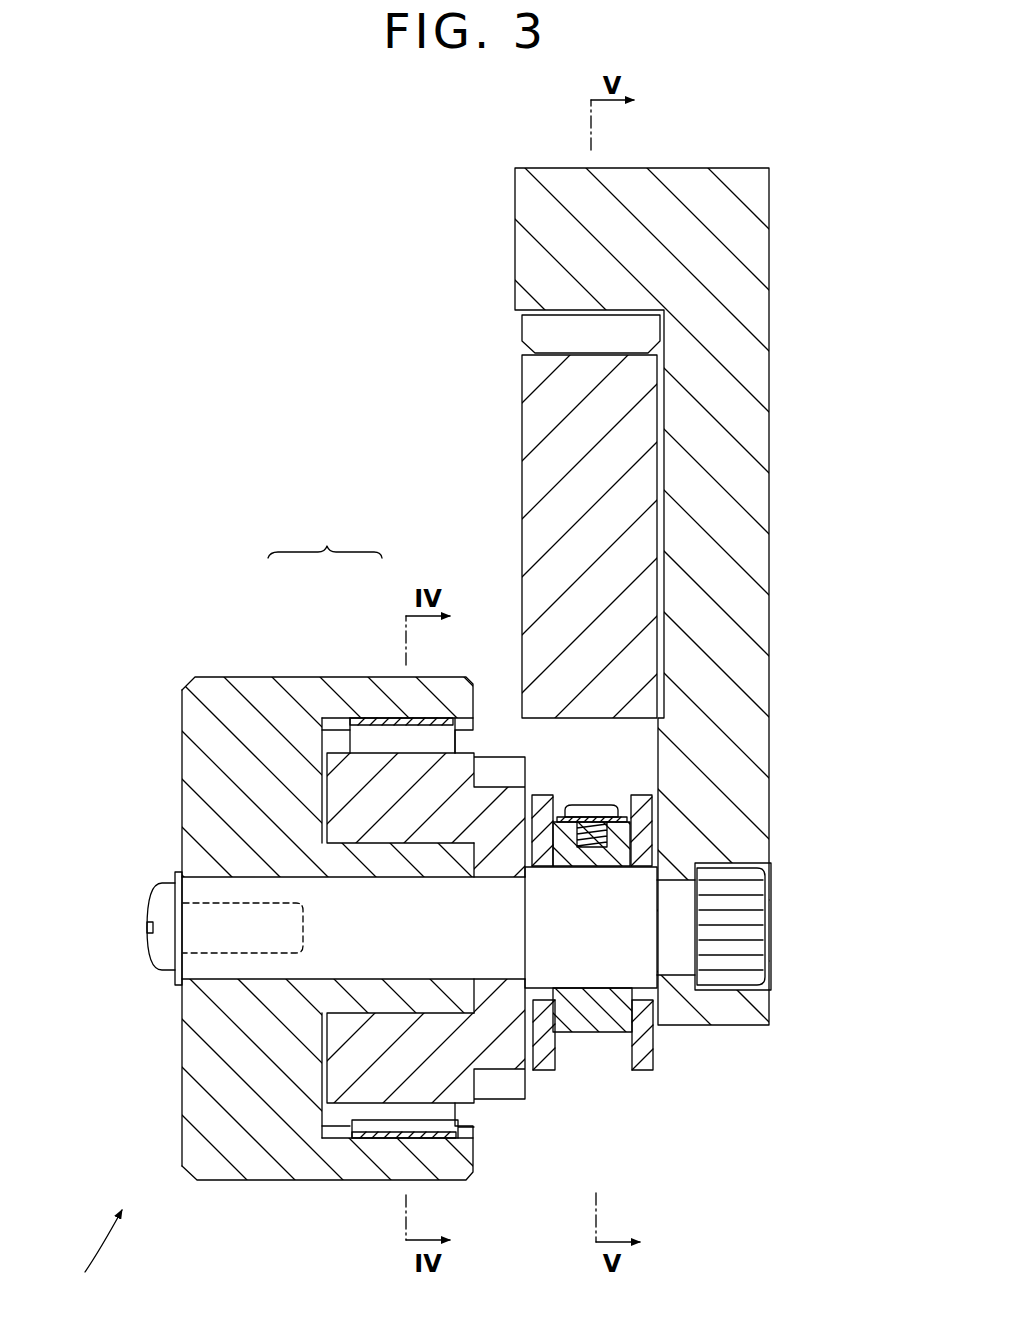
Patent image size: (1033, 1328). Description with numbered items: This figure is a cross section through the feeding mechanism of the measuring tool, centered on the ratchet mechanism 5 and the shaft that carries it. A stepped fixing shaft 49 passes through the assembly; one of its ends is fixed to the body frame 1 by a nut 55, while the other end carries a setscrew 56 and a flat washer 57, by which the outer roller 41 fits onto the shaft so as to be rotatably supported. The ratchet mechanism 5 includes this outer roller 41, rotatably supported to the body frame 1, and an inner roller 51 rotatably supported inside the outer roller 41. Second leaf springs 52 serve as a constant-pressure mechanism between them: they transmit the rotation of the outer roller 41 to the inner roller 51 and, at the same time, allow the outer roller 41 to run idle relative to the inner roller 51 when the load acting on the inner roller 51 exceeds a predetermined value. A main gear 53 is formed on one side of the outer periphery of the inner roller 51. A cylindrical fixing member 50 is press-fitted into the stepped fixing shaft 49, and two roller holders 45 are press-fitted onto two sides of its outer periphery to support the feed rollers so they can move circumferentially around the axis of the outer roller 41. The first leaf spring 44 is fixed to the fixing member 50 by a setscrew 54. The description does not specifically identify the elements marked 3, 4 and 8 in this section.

The body frame 1 is at (515, 243).
The movable member 3 is at (522, 424).
The operating unit 4 is at (84, 1255).
The ratchet mechanism 5 is at (325, 539).
The spacer 8 is at (522, 329).
The outer roller 41 is at (293, 677).
The first leaf spring 44 is at (562, 820).
The roller holder 45 is at (545, 795).
The stepped fixing shaft 49 is at (643, 913).
The fixing member 50 is at (598, 1033).
The inner roller 51 is at (365, 752).
The second leaf spring 52 is at (400, 718).
The main gear 53 is at (497, 1099).
The setscrew 54 is at (587, 805).
The nut 55 is at (773, 926).
The setscrew 56 is at (148, 923).
The flat washer 57 is at (177, 872).